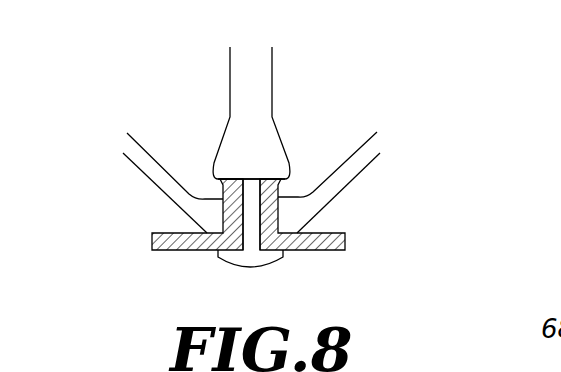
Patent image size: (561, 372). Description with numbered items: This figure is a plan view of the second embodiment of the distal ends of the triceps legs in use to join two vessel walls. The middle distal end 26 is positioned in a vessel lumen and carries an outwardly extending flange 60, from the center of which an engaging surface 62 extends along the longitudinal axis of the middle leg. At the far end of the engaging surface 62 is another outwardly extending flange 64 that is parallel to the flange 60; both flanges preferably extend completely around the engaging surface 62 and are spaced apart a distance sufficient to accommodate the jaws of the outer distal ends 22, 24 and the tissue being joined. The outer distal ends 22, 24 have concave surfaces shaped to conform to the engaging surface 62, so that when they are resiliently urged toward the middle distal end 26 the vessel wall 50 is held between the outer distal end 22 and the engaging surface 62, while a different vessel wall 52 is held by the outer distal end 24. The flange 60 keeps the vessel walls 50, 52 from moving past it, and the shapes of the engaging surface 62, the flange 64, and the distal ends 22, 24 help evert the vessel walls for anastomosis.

The distal end of outer leg 22 is at (192, 210).
The distal end of outer leg 24 is at (316, 218).
The distal end of middle leg 26 is at (320, 97).
The vessel wall 50 is at (175, 250).
The vessel wall 52 is at (320, 251).
The flange 60 is at (291, 182).
The engaging surface 62 is at (253, 200).
The flange 64 is at (265, 257).